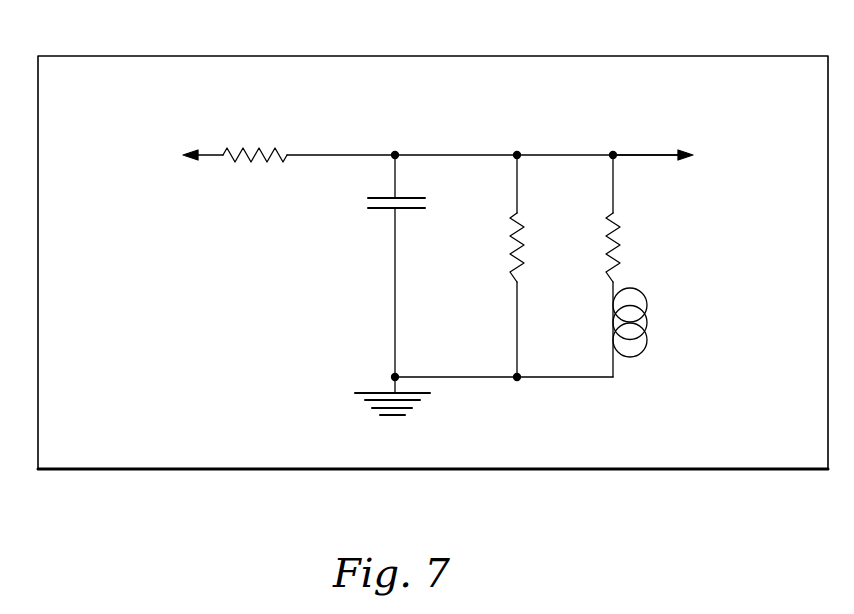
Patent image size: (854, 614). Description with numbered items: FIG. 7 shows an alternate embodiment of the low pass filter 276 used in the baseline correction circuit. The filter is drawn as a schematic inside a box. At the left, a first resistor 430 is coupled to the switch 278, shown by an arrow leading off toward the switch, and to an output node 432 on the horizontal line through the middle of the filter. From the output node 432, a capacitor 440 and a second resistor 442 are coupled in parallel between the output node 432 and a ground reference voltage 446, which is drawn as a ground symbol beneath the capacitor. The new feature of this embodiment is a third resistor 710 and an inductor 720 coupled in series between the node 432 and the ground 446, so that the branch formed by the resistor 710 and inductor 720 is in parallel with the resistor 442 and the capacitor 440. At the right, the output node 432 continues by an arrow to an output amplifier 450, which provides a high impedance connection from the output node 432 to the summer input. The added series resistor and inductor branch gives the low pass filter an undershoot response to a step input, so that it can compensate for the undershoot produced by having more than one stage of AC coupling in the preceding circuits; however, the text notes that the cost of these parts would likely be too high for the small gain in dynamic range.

The low pass filter 276 is at (453, 56).
The switch 278 is at (146, 148).
The resistor 430 is at (266, 160).
The output node 432 is at (396, 152).
The capacitor 440 is at (372, 210).
The resistor 442 is at (512, 248).
The ground reference voltage 446 is at (405, 408).
The output amplifier 450 is at (689, 152).
The resistor 710 is at (608, 262).
The inductor 720 is at (640, 352).